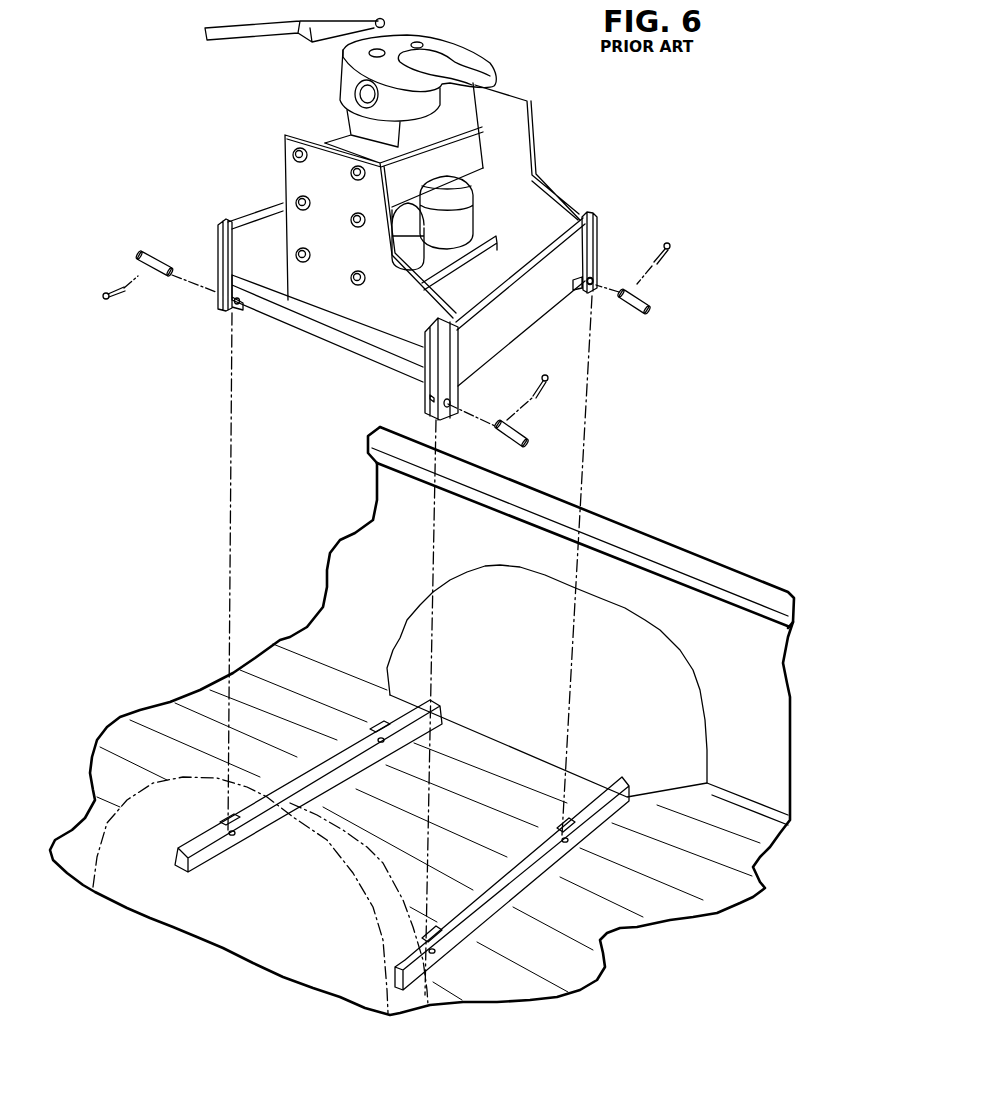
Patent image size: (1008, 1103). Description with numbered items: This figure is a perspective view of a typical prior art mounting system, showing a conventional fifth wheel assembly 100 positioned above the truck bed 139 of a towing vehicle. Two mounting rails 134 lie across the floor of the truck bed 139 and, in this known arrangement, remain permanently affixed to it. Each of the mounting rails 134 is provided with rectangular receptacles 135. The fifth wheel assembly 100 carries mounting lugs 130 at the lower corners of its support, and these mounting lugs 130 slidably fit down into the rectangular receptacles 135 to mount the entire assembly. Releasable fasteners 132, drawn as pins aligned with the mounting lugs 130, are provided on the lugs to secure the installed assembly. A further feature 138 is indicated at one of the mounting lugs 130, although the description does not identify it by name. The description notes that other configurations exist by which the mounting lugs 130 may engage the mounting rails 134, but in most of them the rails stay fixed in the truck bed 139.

The fifth wheel assembly 100 is at (596, 146).
The mounting lugs 130 is at (218, 300).
The releasable fasteners 132 is at (145, 252).
The mounting rails 134 is at (192, 858).
The rectangular receptacles 135 is at (380, 730).
The aperture 138 is at (592, 284).
The truck bed 139 is at (470, 820).